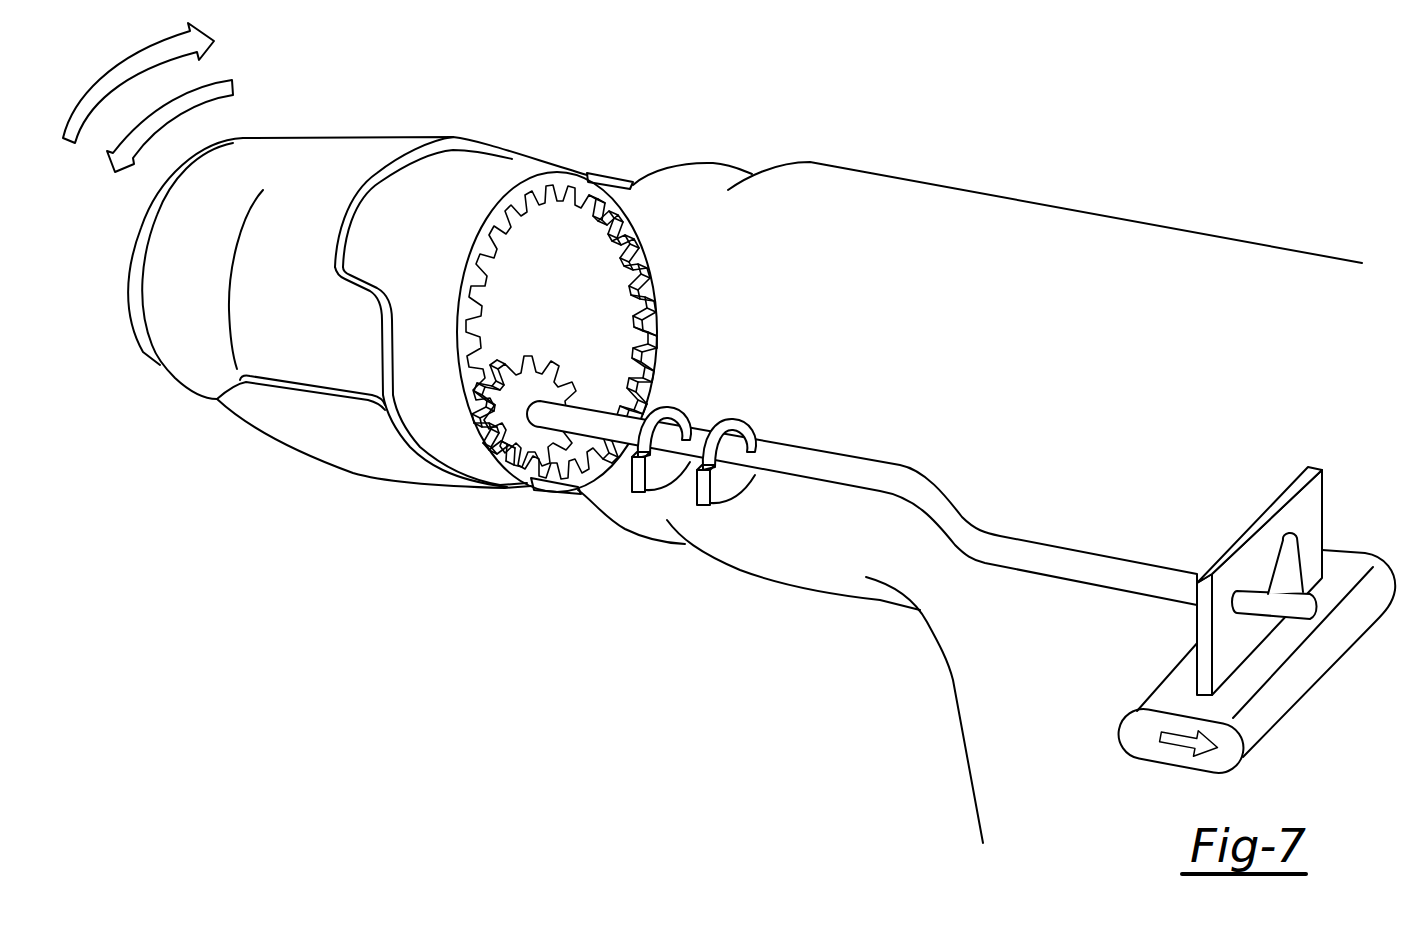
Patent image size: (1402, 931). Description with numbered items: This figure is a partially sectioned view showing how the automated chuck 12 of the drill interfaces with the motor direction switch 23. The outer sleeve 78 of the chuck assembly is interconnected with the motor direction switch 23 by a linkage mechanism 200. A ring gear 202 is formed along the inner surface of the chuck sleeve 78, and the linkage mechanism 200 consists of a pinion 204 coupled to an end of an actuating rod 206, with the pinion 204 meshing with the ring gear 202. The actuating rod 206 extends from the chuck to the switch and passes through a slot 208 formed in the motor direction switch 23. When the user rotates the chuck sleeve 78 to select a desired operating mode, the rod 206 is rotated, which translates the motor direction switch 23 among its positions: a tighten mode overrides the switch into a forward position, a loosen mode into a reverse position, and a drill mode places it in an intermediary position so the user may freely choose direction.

The chuck 12 is at (484, 118).
The outer sleeve 78 is at (300, 440).
The linkage mechanism 200 is at (862, 487).
The ring gear 202 is at (647, 296).
The pinion 204 is at (535, 362).
The actuating rod 206 is at (943, 522).
The motor direction switch 23 is at (1259, 580).
The slot 208 is at (1295, 552).